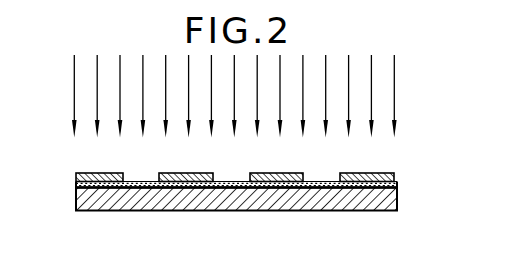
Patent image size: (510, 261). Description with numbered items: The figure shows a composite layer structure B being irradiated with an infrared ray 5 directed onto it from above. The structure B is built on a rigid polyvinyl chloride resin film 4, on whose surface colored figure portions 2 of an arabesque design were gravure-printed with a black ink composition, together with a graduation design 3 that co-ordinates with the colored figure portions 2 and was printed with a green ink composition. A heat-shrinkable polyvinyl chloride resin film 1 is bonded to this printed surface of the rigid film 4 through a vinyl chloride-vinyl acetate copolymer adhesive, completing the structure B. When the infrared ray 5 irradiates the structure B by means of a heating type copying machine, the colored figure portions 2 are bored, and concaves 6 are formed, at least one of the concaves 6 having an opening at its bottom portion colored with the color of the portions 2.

The heat-shrinkable polyvinyl chloride resin film 1 is at (187, 177).
The colored figure portions 2 is at (143, 185).
The graduation design 3 is at (359, 188).
The rigid polyvinyl chloride resin film 4 is at (267, 183).
The infrared ray 5 is at (348, 95).
The concaves 6 is at (321, 179).
The composite layer structure B is at (422, 175).